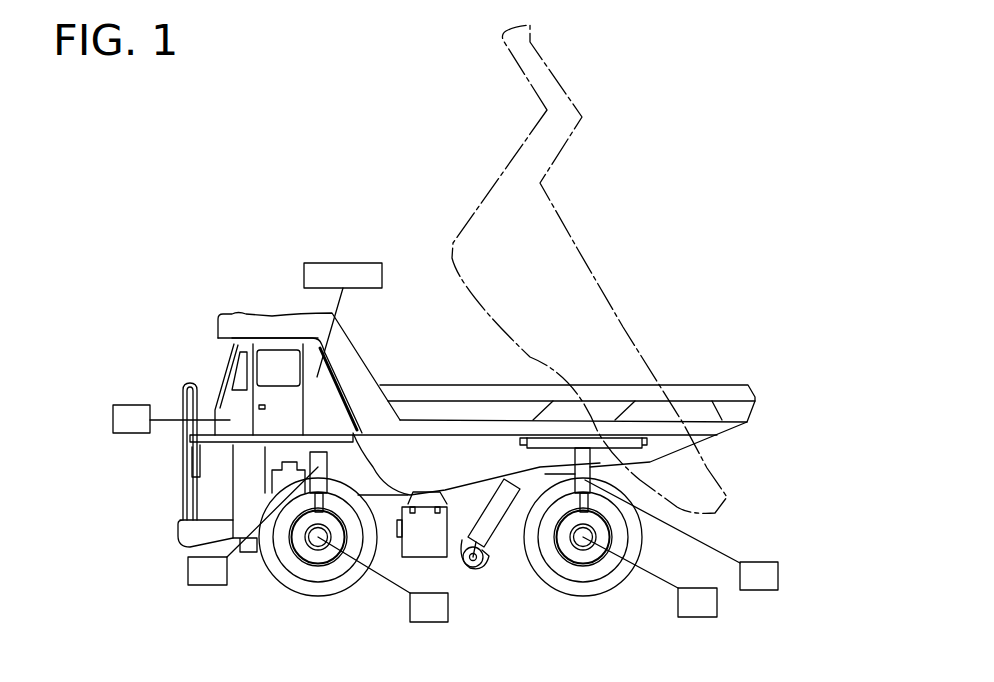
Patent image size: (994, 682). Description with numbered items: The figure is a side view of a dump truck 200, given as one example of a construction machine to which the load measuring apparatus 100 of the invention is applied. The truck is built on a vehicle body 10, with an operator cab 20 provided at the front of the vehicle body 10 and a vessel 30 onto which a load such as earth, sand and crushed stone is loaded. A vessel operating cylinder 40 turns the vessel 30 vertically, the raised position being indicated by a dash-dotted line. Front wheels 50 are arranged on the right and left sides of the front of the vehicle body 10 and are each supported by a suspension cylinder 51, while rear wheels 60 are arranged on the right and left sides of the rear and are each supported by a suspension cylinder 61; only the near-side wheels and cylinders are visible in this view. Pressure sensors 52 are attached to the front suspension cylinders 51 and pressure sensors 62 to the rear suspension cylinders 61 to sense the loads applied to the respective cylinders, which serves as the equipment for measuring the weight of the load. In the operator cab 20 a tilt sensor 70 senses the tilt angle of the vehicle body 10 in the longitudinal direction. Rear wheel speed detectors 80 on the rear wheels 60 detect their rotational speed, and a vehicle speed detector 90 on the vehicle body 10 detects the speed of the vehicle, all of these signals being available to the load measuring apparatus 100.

The dump truck 200 is at (214, 288).
The vehicle body 10 is at (200, 498).
The operator cab 20 is at (219, 376).
The vessel 30 is at (583, 245).
The vessel operating cylinder 40 is at (487, 530).
The front wheel 50 is at (307, 588).
The suspension cylinder 51 is at (358, 430).
The pressure sensor 52 is at (203, 587).
The rear wheel 60 is at (590, 588).
The suspension cylinder 61 is at (573, 467).
The pressure sensor 62 is at (762, 590).
The tilt sensor 70 is at (113, 418).
The rear wheel speed detector 80 is at (697, 617).
The vehicle speed detector 90 is at (432, 622).
The load measuring apparatus 100 is at (347, 263).